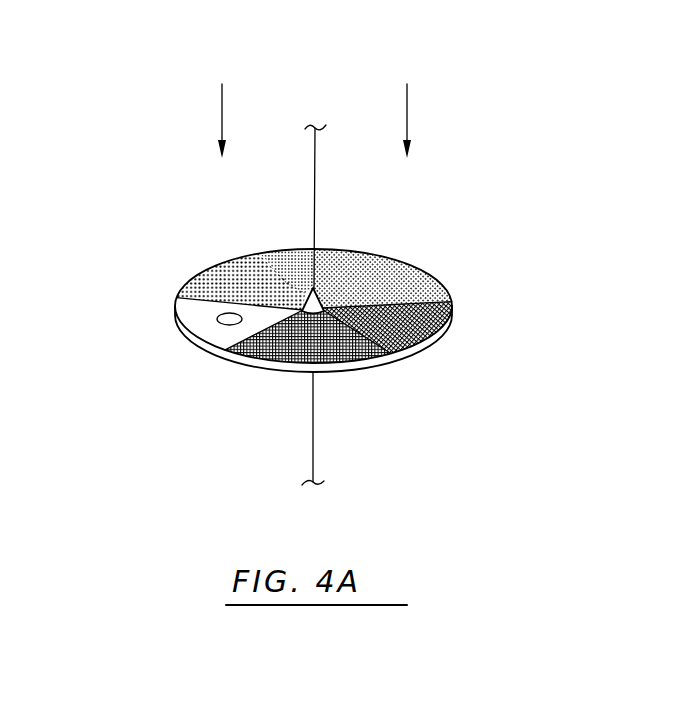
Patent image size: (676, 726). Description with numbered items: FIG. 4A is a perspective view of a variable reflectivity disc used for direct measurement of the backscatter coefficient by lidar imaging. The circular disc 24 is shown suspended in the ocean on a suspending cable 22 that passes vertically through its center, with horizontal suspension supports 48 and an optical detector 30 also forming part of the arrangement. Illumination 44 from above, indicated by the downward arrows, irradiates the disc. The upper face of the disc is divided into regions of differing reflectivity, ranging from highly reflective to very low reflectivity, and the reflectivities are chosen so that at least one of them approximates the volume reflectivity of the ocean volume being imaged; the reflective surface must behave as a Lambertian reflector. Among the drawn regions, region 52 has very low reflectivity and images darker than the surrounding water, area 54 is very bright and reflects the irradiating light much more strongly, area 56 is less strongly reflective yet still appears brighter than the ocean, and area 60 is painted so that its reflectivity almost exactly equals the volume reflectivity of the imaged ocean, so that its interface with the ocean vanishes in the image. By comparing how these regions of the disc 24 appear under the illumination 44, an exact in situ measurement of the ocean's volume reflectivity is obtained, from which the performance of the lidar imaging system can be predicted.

The suspending cable 22 is at (317, 162).
The disc 24 is at (421, 270).
The optical detector 30 is at (214, 268).
The illumination 44 is at (309, 109).
The horizontal suspension supports 48 is at (305, 293).
The region 52 is at (391, 353).
The area 54 is at (192, 309).
The area 56 is at (227, 313).
The area 60 is at (452, 302).